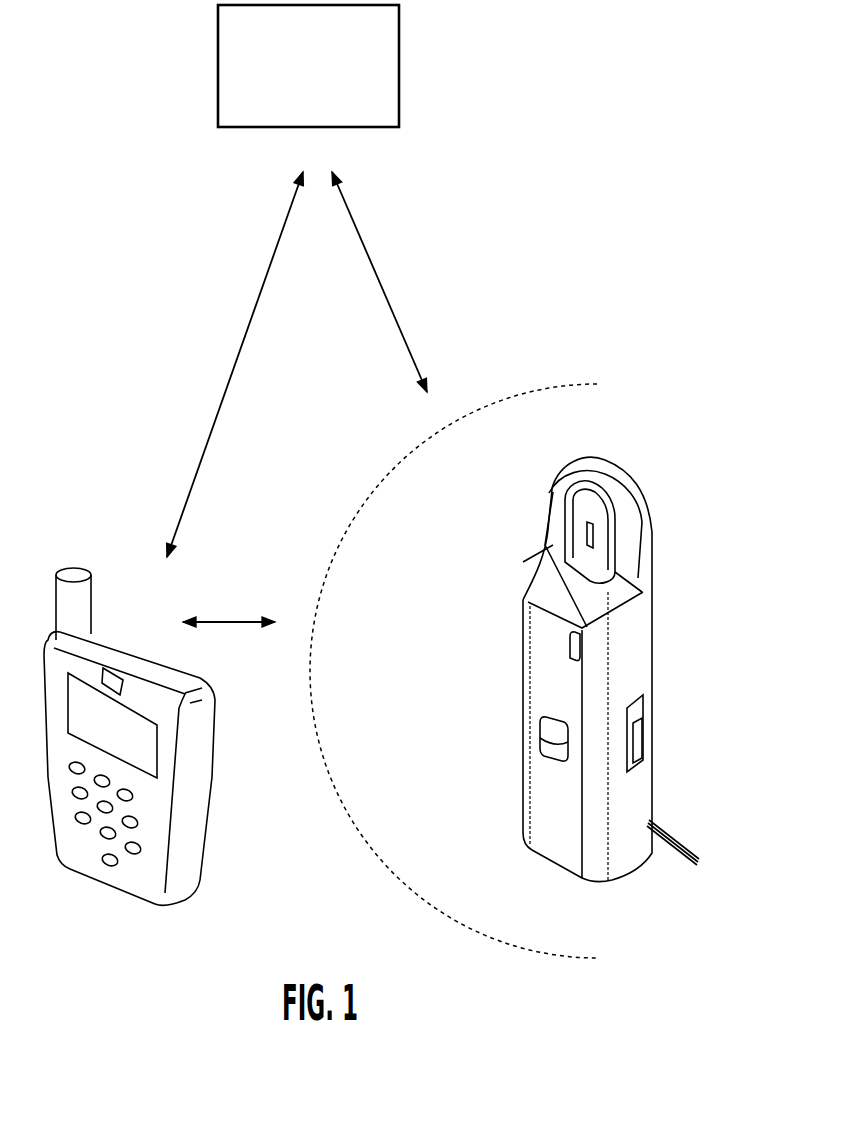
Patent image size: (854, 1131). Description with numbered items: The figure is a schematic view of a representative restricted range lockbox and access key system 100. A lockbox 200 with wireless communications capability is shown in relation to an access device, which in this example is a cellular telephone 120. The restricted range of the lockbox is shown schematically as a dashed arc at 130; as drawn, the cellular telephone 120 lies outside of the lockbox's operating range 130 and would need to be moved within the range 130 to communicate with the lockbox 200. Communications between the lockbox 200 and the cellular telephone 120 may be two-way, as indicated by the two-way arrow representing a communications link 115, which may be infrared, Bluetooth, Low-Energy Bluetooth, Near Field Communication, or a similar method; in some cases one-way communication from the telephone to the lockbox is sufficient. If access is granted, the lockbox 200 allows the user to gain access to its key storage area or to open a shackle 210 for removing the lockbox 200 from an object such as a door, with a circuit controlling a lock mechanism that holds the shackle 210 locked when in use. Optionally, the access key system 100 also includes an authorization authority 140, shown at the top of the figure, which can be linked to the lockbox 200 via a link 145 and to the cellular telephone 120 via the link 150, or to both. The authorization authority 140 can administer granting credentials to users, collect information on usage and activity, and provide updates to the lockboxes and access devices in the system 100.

The restricted range lockbox and access key system 100 is at (605, 124).
The authorization authority 140 is at (400, 41).
The link 145 is at (385, 292).
The link 150 is at (240, 352).
The communications link 115 is at (223, 620).
The cellular telephone 120 is at (148, 907).
The restricted range 130 is at (378, 857).
The lockbox 200 is at (542, 768).
The shackle 210 is at (605, 478).